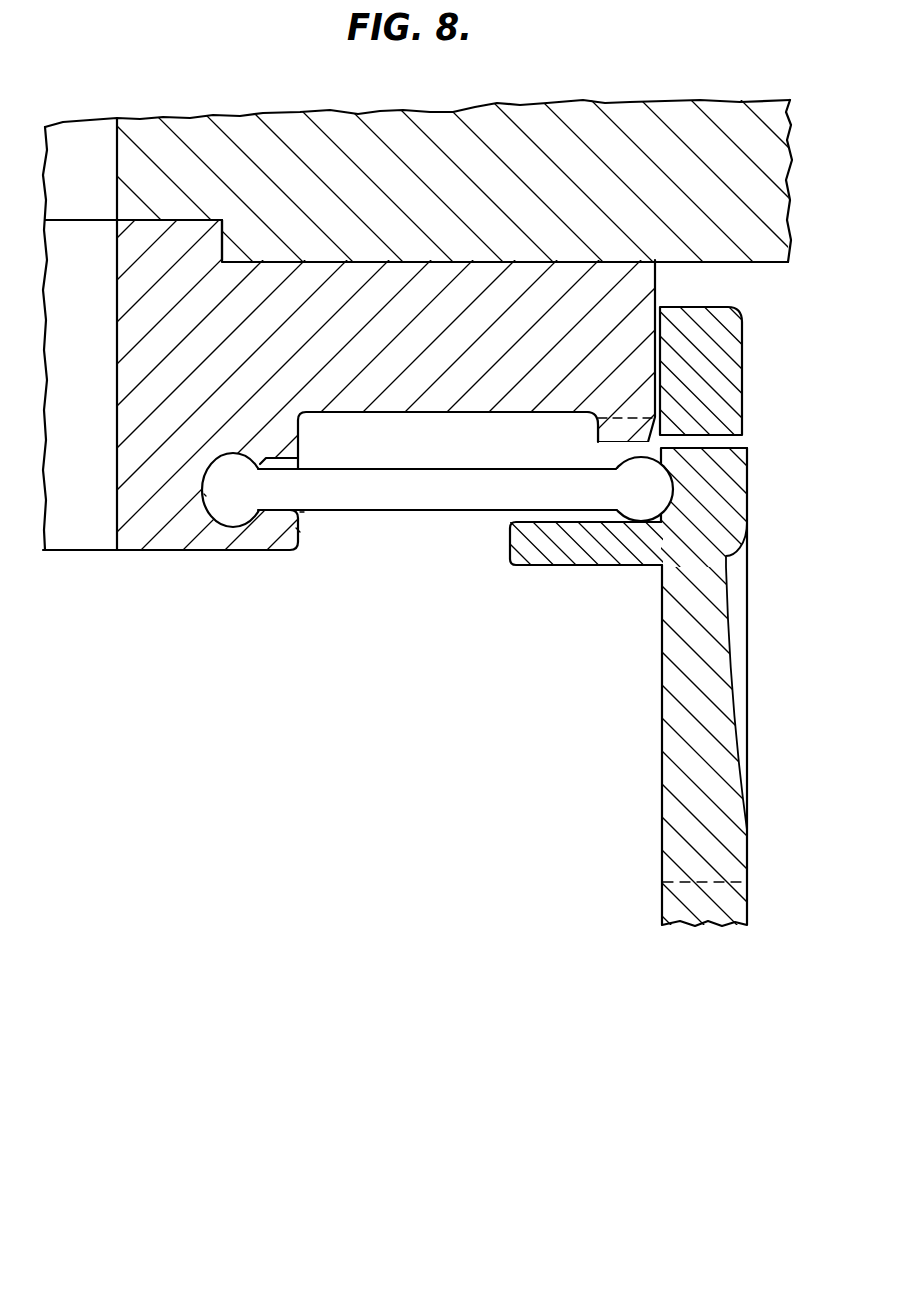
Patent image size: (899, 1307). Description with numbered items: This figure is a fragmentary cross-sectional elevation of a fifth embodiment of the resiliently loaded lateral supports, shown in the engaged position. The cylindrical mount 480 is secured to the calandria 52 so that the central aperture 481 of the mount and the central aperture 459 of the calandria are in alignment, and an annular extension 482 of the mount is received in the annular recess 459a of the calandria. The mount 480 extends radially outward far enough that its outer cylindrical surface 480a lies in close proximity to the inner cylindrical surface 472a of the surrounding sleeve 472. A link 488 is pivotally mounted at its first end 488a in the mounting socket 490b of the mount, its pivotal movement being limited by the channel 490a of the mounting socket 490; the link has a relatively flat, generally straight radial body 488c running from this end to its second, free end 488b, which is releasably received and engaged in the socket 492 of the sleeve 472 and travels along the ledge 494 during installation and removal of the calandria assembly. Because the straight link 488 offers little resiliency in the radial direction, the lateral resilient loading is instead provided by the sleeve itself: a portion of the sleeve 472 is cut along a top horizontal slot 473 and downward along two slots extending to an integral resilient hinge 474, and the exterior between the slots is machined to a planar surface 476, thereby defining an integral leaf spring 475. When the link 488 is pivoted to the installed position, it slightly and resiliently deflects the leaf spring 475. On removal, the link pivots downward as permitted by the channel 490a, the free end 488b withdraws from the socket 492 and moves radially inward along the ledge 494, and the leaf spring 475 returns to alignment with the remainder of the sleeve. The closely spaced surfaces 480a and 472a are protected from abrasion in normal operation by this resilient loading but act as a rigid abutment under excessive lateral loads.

The calandria 52 is at (461, 202).
The central aperture 459 is at (113, 148).
The annular recess 459a is at (224, 236).
The sleeve 472 is at (606, 656).
The inner cylindrical surface 472a is at (656, 330).
The horizontal slot 473 is at (727, 447).
The integral resilient hinge 474 is at (668, 880).
The integral leaf spring 475 is at (712, 687).
The planar surface 476 is at (730, 642).
The cylindrical mount 480 is at (424, 309).
The outer cylindrical surface 480a is at (656, 282).
The central aperture 481 is at (116, 383).
The annular extension 482 is at (186, 230).
The link 488 is at (455, 506).
The first end 488a is at (236, 505).
The second, free end 488b is at (656, 504).
The seal web 488c is at (420, 498).
The mounting socket 490 is at (302, 522).
The channel 490a is at (298, 532).
The mounting socket 490b is at (205, 506).
The socket 492 is at (666, 480).
The ledge 494 is at (565, 513).